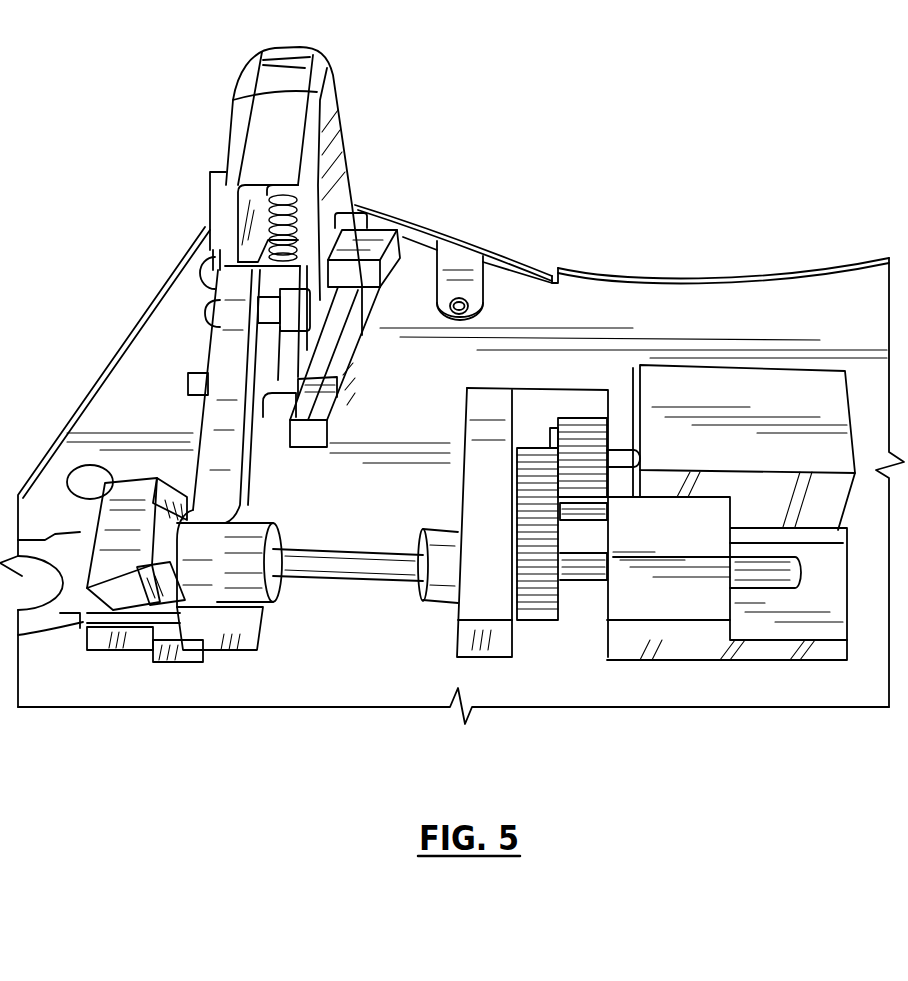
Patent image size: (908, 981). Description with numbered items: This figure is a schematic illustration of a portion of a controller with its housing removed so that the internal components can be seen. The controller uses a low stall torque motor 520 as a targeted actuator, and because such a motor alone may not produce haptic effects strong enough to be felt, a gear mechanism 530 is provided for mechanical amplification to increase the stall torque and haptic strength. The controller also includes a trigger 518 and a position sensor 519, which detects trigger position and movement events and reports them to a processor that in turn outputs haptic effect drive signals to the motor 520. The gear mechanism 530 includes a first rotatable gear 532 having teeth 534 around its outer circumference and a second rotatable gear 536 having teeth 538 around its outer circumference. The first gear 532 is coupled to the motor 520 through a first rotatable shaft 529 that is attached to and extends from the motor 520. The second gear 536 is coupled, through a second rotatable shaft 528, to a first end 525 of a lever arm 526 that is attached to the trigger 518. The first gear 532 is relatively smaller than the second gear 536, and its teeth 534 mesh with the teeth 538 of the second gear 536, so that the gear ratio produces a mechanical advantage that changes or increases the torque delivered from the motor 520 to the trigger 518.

The trigger 518 is at (343, 110).
The position sensor 519 is at (176, 612).
The motor 520 is at (737, 385).
The first end 525 is at (207, 594).
The lever arm 526 is at (222, 366).
The second rotatable shaft 528 is at (325, 590).
The first rotatable shaft 529 is at (615, 455).
The gear mechanism 530 is at (530, 428).
The first rotatable gear 532 is at (583, 525).
The teeth 534 is at (595, 500).
The second rotatable gear 536 is at (543, 603).
The teeth 538 is at (532, 582).